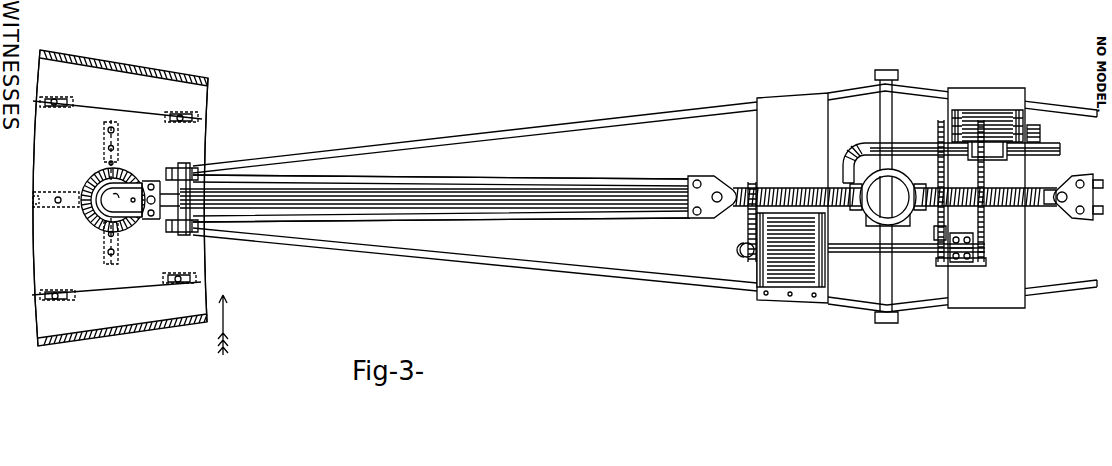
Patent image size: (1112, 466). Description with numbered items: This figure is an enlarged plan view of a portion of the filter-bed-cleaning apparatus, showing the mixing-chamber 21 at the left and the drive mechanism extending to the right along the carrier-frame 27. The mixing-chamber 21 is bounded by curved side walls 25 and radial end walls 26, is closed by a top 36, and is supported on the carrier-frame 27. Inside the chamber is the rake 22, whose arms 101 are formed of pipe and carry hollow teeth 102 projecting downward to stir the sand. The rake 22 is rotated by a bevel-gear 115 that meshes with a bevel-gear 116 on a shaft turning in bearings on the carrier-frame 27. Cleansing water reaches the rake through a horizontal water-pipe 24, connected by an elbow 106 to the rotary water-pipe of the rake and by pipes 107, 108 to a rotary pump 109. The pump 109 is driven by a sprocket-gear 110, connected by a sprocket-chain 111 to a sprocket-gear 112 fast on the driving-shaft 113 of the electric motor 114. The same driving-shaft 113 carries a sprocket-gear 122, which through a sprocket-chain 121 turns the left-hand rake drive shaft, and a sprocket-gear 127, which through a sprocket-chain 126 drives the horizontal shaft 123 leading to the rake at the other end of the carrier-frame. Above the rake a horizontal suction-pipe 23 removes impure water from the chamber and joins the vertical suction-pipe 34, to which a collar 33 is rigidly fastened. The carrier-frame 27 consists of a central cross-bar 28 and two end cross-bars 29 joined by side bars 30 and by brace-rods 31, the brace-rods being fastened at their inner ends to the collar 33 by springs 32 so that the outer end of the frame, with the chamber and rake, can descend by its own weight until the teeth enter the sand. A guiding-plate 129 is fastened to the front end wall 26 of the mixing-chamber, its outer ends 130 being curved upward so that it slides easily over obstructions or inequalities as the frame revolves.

The mixing-chamber 21 is at (65, 305).
The rake 22 is at (98, 192).
The horizontal suction-pipe 23 is at (445, 178).
The water-pipe 24 is at (515, 190).
The curved side walls 25 is at (204, 258).
The radial end walls 26 is at (175, 117).
The carrier-frame 27 is at (441, 239).
The central cross-bar 28 is at (893, 280).
The end cross-bars 29 is at (190, 165).
The side bars 30 is at (646, 114).
The brace-rods 31 is at (598, 178).
The springs 32 is at (718, 180).
The collar 33 is at (866, 218).
The vertical suction-pipe 34 is at (888, 197).
The top 36 is at (120, 198).
The arms 101 is at (60, 207).
The hollow teeth 102 is at (118, 248).
The elbow 106 is at (97, 182).
The pipe 107 is at (850, 172).
The pipe 108 is at (912, 143).
The rotary pump 109 is at (1006, 122).
The sprocket-gear 110 is at (930, 150).
The sprocket-chain 111 is at (936, 231).
The sprocket-gear 112 is at (944, 266).
The driving-shaft 113 is at (852, 250).
The electric motor 114 is at (786, 262).
The bevel-gear 115 is at (166, 176).
The bevel-gear 116 is at (170, 229).
The sprocket-chain 121 is at (748, 234).
The sprocket-gear 122 is at (748, 255).
The horizontal shaft 123 is at (1050, 190).
The sprocket-chain 126 is at (985, 230).
The sprocket-gear 127 is at (975, 250).
The guiding-plate 129 is at (108, 100).
The outer ends 130 is at (120, 58).